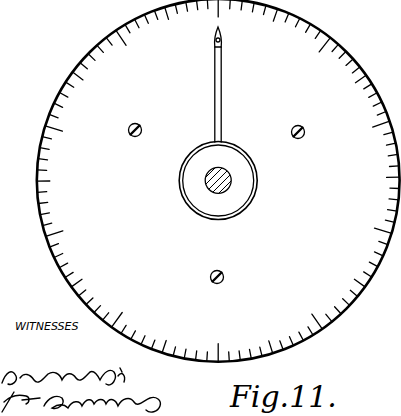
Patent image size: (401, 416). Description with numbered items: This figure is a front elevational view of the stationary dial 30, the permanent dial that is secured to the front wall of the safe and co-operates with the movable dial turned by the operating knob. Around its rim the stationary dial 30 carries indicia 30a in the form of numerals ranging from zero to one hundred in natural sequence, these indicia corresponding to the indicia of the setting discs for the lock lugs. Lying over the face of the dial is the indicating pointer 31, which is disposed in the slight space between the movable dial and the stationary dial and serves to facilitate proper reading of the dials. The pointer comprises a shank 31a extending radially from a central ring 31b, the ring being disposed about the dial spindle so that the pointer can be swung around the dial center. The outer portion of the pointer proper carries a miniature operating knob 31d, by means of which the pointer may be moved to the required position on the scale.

The stationary dial 30 is at (64, 158).
The indicia 30a is at (331, 42).
The indicating pointer 31 is at (214, 42).
The shank 31a is at (222, 73).
The central ring 31b is at (243, 151).
The miniature operating knob 31d is at (222, 37).